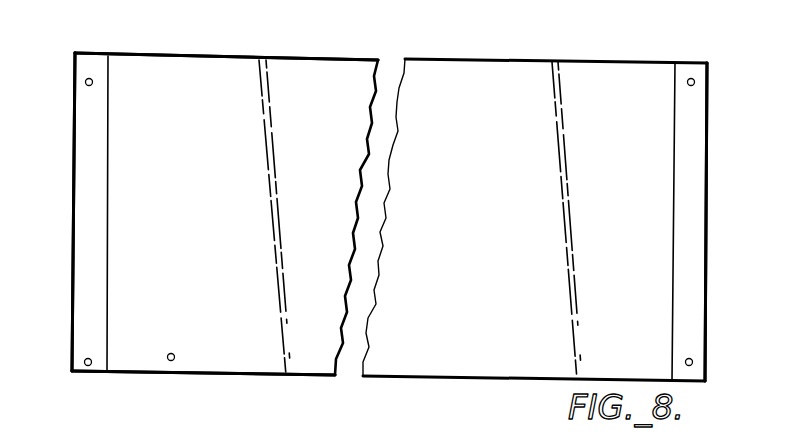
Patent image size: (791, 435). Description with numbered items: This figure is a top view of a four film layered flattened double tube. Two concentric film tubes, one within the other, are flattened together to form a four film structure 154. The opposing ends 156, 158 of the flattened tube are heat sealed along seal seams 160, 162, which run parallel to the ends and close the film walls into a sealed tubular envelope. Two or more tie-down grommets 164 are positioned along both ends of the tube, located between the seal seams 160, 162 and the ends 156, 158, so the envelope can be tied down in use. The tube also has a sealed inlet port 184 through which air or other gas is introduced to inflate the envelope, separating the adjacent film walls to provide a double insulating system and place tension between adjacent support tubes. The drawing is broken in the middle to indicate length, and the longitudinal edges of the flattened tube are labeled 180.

The four film structure 154 is at (218, 48).
The opposing end 156 is at (75, 165).
The opposing end 158 is at (707, 216).
The seal seam 160 is at (108, 180).
The seal seam 162 is at (675, 187).
The tie-down grommets 164 is at (92, 82).
The panel edges 180 is at (315, 58).
The sealed inlet port 184 is at (171, 361).